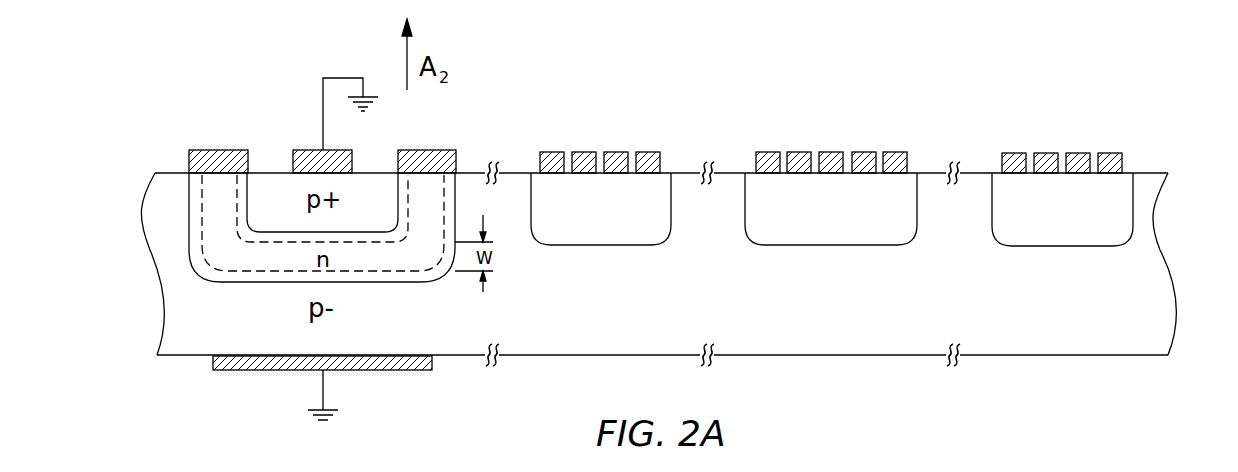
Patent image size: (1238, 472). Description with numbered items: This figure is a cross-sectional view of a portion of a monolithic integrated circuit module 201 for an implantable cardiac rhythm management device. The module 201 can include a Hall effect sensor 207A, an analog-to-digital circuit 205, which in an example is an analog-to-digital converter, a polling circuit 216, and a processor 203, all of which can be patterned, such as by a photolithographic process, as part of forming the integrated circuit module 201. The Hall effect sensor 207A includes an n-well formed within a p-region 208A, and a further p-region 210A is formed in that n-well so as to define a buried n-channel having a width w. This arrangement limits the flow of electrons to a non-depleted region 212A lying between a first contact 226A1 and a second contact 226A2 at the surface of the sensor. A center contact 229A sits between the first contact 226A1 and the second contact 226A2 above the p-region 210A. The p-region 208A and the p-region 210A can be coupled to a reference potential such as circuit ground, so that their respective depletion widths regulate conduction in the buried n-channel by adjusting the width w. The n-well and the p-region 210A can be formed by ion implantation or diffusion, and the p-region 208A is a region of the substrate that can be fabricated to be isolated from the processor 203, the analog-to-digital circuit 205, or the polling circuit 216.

The monolithic integrated circuit module 201 is at (1058, 57).
The processor 203 is at (1083, 137).
The analog-to-digital circuit 205 is at (622, 135).
The polling circuit 216 is at (870, 135).
The Hall effect sensor 207A is at (277, 103).
The first contact 226A1 is at (219, 150).
The center electrode 229A is at (312, 150).
The second contact 226A2 is at (428, 150).
The p-region 210A is at (374, 170).
The non-depleted region 212A is at (222, 257).
The p-region 208A is at (186, 357).